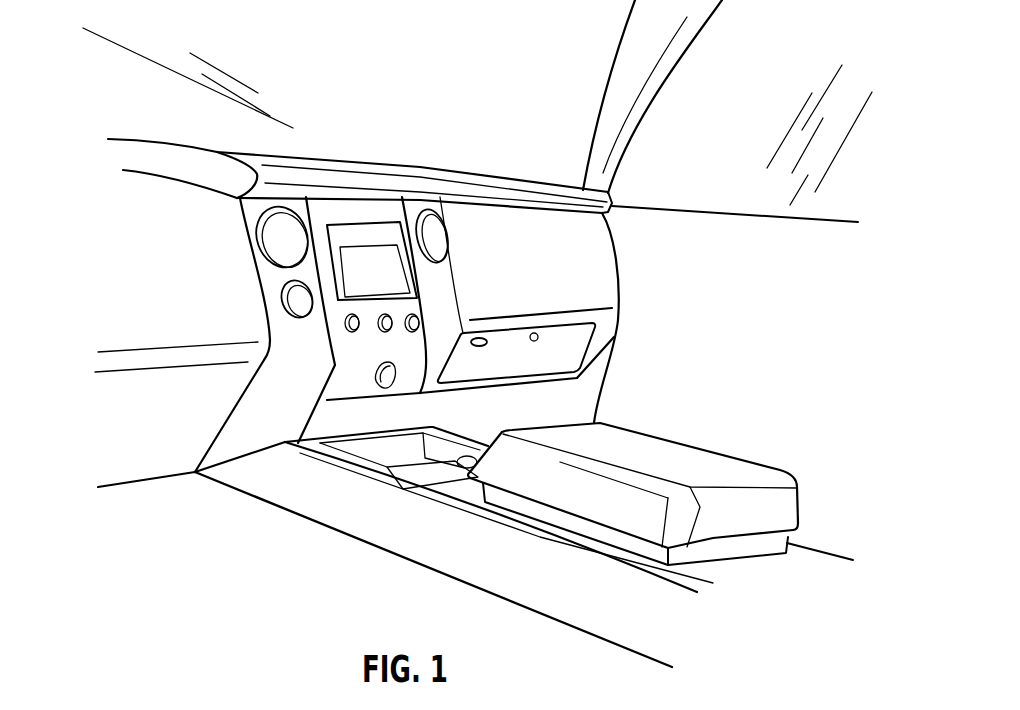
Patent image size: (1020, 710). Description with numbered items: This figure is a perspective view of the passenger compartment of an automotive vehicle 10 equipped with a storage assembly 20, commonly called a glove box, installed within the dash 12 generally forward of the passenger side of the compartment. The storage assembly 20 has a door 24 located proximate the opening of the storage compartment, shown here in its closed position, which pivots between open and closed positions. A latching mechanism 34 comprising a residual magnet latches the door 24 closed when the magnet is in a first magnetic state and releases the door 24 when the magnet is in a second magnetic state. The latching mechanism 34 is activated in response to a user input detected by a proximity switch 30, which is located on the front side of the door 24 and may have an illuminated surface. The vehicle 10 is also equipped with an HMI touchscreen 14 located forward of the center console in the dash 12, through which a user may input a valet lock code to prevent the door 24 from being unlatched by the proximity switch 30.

The vehicle 10 is at (706, 110).
The dash 12 is at (552, 248).
The HMI touchscreen 14 is at (362, 233).
The storage assembly 20 is at (600, 380).
The door 24 is at (612, 333).
The proximity switch 30 is at (482, 334).
The latching mechanism 34 is at (540, 339).